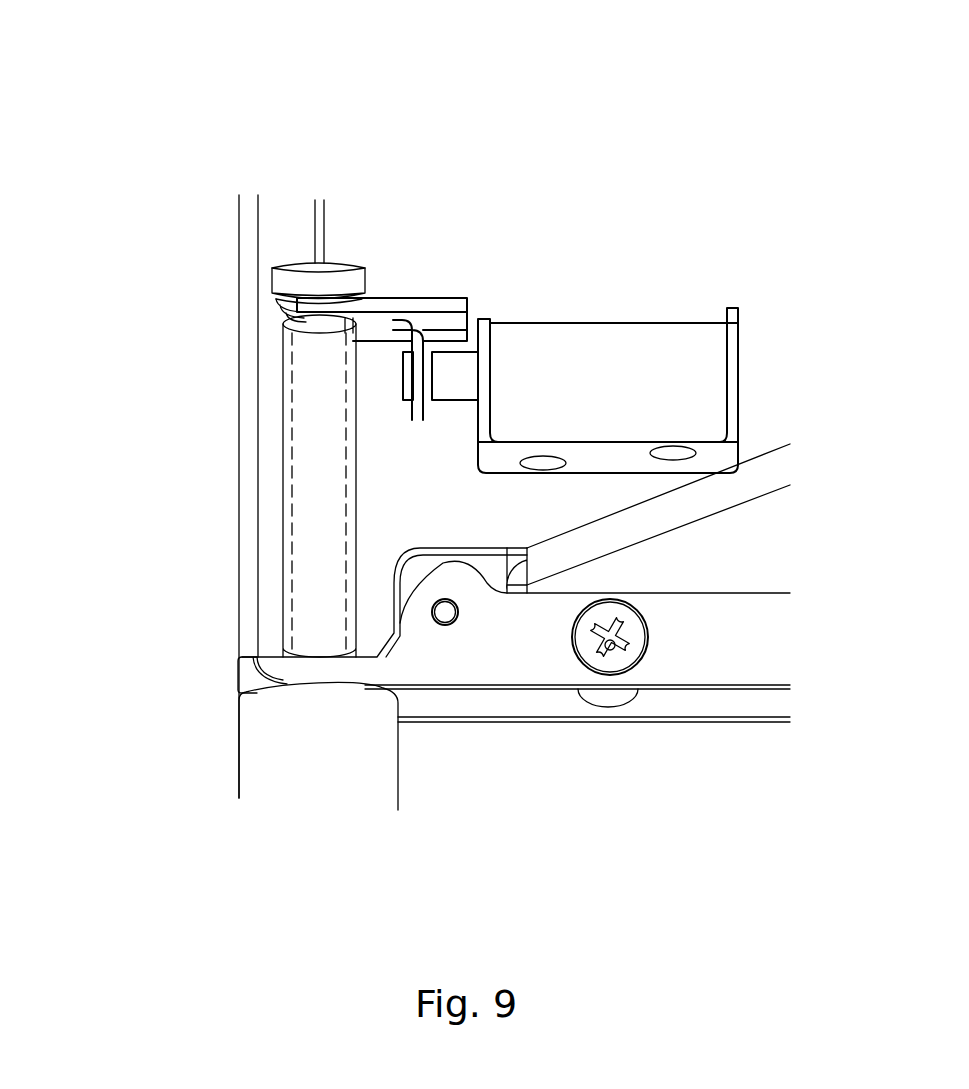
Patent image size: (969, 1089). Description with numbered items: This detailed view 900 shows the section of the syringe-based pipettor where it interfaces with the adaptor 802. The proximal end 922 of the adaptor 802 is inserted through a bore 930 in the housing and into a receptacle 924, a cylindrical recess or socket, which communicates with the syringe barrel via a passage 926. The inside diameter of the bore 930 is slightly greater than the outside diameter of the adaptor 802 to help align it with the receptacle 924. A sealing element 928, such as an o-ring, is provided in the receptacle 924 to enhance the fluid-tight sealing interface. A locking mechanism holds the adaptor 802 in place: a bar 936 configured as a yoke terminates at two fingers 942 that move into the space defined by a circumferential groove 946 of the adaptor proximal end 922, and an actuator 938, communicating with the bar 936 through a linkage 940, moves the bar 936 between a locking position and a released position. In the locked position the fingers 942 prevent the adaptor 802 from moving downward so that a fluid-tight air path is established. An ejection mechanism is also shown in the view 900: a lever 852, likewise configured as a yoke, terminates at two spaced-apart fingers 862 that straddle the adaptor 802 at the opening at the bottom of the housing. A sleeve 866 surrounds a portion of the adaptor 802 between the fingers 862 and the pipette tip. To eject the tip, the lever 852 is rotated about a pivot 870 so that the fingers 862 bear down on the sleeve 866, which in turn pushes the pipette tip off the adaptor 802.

The latch assembly 900 is at (107, 120).
The proximal end of the adaptor 922 is at (227, 309).
The passage 926 is at (315, 217).
The receptacle 924 is at (358, 265).
The sealing element 928 is at (273, 290).
The fingers 942 is at (316, 305).
The bar 936 is at (410, 297).
The linkage 940 is at (463, 372).
The actuator 938 is at (692, 423).
The circumferential groove 946 is at (300, 322).
The bore 930 is at (282, 532).
The adaptor 802 is at (293, 452).
The fingers 862 is at (255, 664).
The lever 852 is at (738, 593).
The pivot 870 is at (445, 625).
The sleeve 866 is at (263, 722).